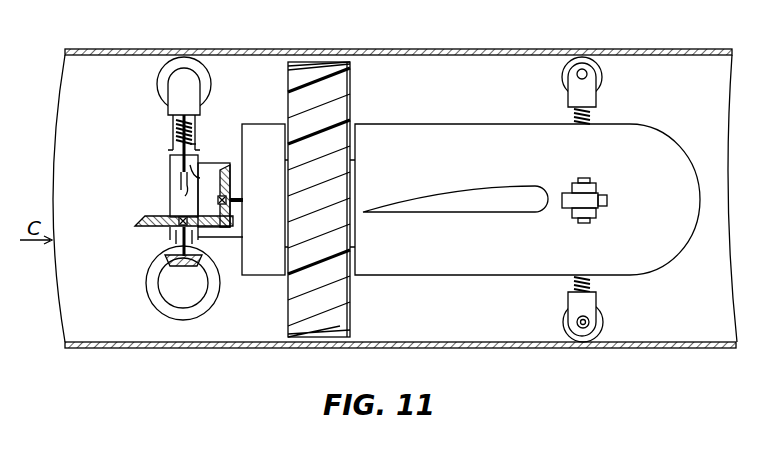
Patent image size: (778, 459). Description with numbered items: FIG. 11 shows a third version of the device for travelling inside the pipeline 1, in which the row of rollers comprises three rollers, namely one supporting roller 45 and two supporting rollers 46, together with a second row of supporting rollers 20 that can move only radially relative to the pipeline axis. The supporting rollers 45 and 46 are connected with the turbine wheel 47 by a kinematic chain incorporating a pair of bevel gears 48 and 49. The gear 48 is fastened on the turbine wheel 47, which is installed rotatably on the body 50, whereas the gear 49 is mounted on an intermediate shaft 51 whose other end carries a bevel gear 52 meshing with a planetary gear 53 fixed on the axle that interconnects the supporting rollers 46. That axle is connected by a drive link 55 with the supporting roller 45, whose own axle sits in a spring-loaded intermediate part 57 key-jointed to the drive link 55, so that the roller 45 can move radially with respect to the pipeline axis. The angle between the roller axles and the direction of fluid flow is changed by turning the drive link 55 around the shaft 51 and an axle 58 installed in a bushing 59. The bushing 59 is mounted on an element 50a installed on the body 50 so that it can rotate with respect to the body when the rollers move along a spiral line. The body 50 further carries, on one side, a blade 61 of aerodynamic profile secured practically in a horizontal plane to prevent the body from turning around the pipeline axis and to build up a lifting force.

The pipeline 1 is at (641, 52).
The supporting rollers 20 is at (570, 67).
The supporting roller 45 is at (165, 72).
The supporting rollers 46 is at (182, 316).
The turbine wheel 47 is at (321, 62).
The bevel gear 48 is at (232, 188).
The bevel gear 49 is at (150, 222).
The body 50 is at (653, 143).
The element 50a is at (258, 265).
The intermediate shaft 51 is at (174, 246).
The bevel gear 52 is at (167, 263).
The planetary gear 53 is at (175, 296).
The drive link 55 is at (170, 182).
The spring-loaded intermediate part 57 is at (178, 144).
The axle 58 is at (188, 194).
The bushing 59 is at (210, 195).
The blade 61 is at (494, 197).